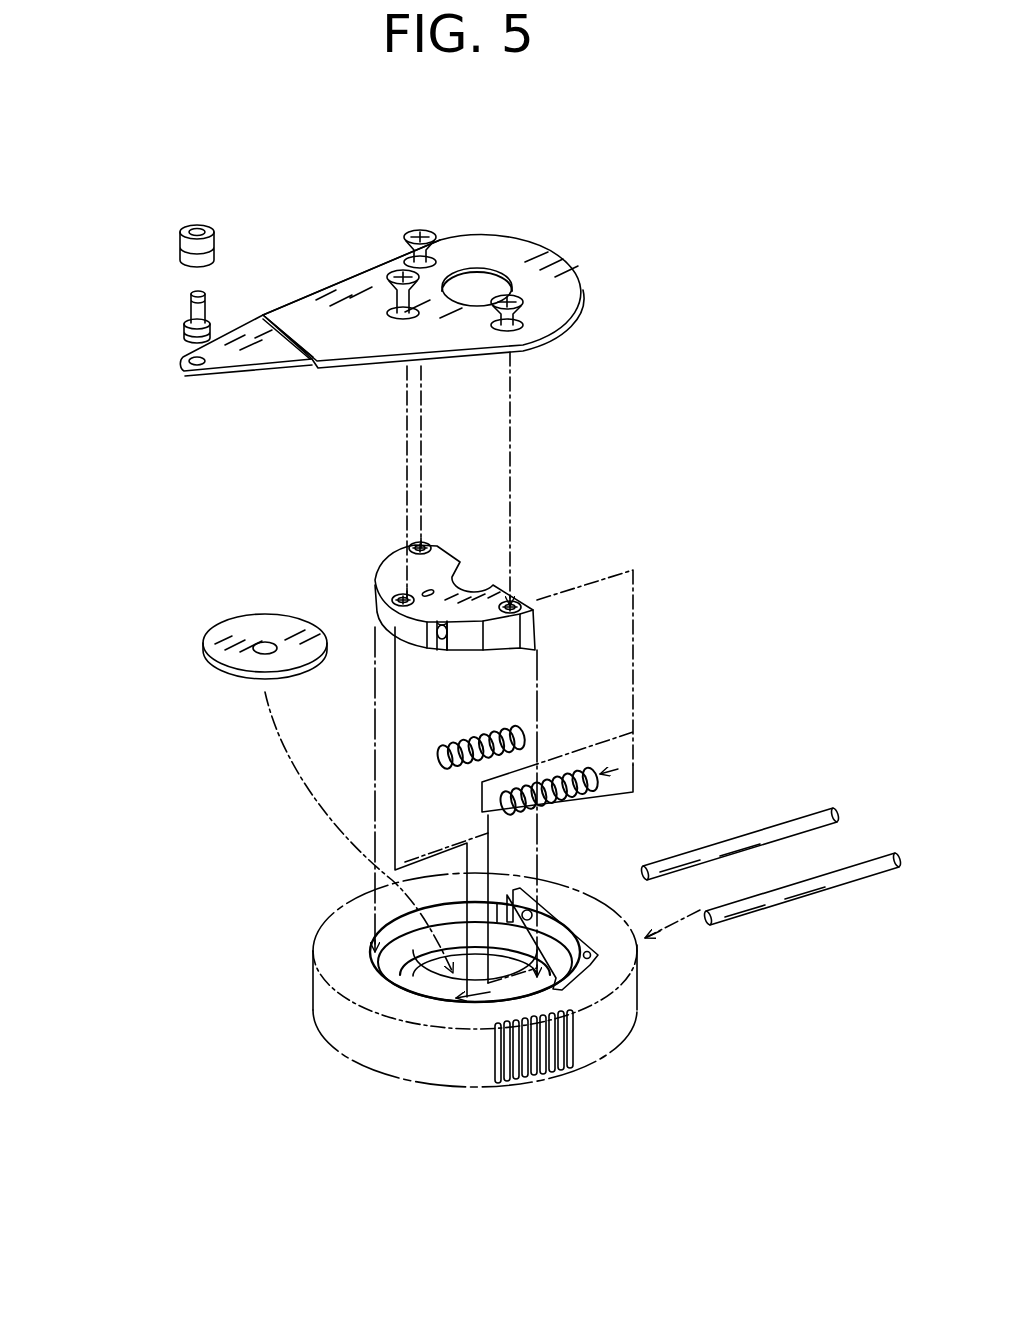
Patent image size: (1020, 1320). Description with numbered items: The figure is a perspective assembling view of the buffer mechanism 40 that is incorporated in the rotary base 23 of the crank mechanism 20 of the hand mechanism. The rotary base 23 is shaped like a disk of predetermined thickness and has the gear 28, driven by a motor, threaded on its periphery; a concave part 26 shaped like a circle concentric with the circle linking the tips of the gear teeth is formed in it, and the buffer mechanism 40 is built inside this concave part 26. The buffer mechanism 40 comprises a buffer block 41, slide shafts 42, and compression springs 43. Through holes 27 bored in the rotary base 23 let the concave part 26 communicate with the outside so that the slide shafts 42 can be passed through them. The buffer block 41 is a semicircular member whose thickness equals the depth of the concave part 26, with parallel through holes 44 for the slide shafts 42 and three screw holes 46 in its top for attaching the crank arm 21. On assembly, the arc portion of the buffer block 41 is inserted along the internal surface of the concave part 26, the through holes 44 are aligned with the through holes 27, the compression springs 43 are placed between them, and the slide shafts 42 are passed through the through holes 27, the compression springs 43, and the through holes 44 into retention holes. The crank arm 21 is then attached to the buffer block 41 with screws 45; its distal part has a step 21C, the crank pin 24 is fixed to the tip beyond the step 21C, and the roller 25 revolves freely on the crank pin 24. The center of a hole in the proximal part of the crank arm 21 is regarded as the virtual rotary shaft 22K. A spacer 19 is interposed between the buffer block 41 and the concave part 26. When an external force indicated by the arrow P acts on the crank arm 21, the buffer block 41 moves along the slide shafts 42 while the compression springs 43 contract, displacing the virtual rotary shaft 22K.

The spacer 19 is at (233, 637).
The crank mechanism 20 is at (370, 265).
The crank arm 21 is at (327, 307).
The step 21C is at (303, 360).
The virtual rotary shaft 22K is at (474, 288).
The rotary base 23 is at (338, 927).
The crank pin 24 is at (182, 312).
The roller 25 is at (178, 240).
The concave part 26 is at (391, 962).
The through holes 27 is at (530, 910).
The gear 28 is at (578, 1062).
The buffer mechanism 40 is at (693, 520).
The buffer block 41 is at (440, 560).
The slide shafts 42 is at (858, 867).
The compression springs 43 is at (487, 752).
The through holes 44 is at (438, 645).
The screws 45 is at (415, 228).
The screw holes 46 is at (538, 600).
The external force P is at (153, 373).